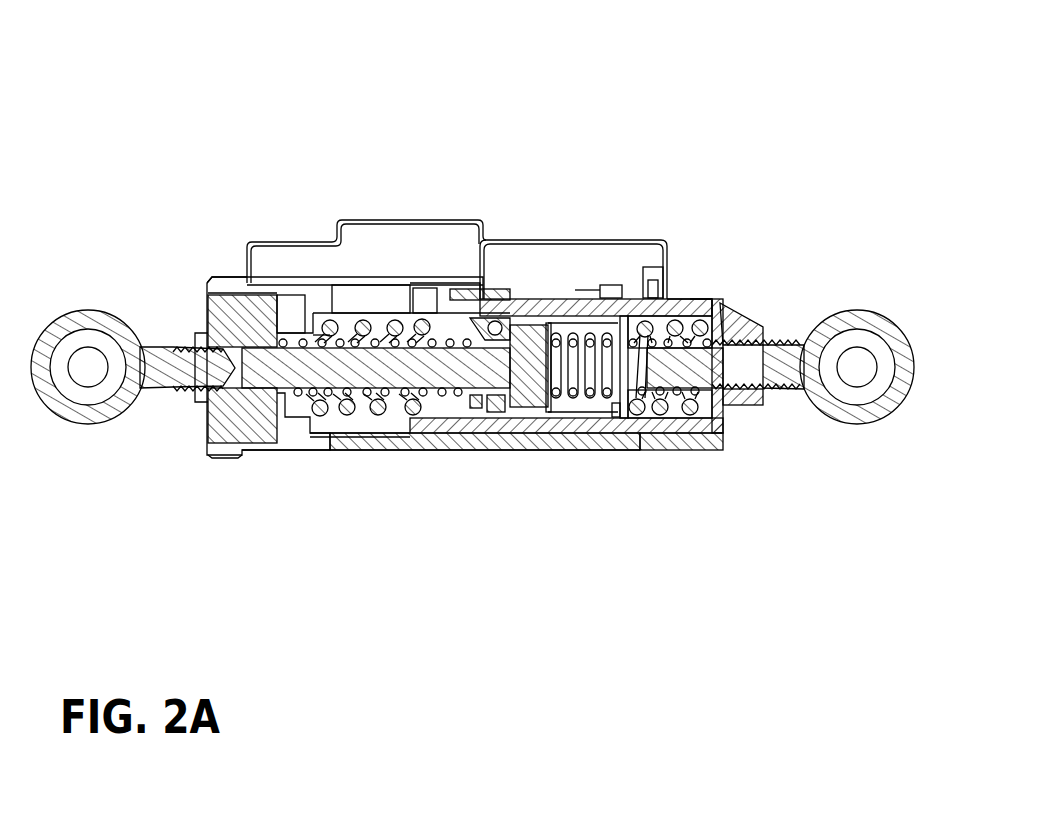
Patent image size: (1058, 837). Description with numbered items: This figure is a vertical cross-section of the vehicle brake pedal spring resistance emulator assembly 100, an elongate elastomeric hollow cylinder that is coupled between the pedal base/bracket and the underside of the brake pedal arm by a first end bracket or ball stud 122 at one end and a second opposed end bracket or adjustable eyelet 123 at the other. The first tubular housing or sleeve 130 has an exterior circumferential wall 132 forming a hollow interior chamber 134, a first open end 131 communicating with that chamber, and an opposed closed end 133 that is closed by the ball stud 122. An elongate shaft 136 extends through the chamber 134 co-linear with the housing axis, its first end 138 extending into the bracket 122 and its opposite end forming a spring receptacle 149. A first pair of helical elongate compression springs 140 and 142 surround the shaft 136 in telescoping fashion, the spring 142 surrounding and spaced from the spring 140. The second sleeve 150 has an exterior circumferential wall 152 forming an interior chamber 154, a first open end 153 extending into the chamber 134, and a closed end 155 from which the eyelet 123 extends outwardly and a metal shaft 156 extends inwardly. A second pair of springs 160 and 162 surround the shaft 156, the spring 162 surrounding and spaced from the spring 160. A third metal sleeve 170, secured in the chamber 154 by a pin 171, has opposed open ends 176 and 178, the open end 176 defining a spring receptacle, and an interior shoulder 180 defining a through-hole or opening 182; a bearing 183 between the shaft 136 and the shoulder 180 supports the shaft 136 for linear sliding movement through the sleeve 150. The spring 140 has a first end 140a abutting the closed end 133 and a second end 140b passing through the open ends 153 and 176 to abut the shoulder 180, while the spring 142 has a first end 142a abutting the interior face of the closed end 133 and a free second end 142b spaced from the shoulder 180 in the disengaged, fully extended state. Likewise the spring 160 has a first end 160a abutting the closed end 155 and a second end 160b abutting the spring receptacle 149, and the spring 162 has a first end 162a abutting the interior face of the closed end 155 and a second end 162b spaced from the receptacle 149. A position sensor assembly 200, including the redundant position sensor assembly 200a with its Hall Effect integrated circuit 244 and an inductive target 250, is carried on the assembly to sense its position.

The vehicle brake pedal spring resistance emulator assembly 100 is at (525, 105).
The first end bracket or ball stud 122 is at (118, 416).
The second opposed end bracket or adjustable eyelet 123 is at (848, 320).
The first tubular housing or sleeve 130 is at (335, 458).
The first open end 131 is at (664, 292).
The exterior circumferential wall 132 is at (437, 440).
The closed end 133 is at (258, 280).
The hollow interior chamber 134 is at (338, 300).
The elongate shaft 136 is at (365, 440).
The first end 138 is at (225, 456).
The helical elongate compression spring 140 is at (470, 293).
The first end 140a is at (310, 418).
The second end 140b is at (437, 440).
The helical elongate compression spring 142 is at (375, 290).
The first end 142a is at (287, 300).
The free second end 142b is at (355, 440).
The spring receptacle 149 is at (527, 414).
The second tubular housing or sleeve 150 is at (686, 442).
The exterior circumferential wall 152 is at (660, 425).
The first open end 153 is at (413, 290).
The interior chamber 154 is at (714, 300).
The closed end 155 is at (737, 405).
The metal shaft 156 is at (747, 313).
The helical elongate compression spring 160 is at (606, 326).
The first end 160a is at (720, 422).
The second end 160b is at (555, 408).
The helical elongate compression spring 162 is at (716, 306).
The first end 162a is at (777, 279).
The second end 162b is at (660, 420).
The third tubular housing or sleeve 170 is at (518, 402).
The pin 171 is at (500, 420).
The open end 176 is at (385, 392).
The open end 178 is at (638, 418).
The interior shoulder 180 is at (485, 300).
The through-hole or opening 182 is at (588, 298).
The bearing 183 is at (480, 416).
The position sensor assembly 200 is at (572, 228).
The position sensor assembly 200a is at (655, 268).
The Hall Effect integrated circuit 244 is at (462, 293).
The inductive target 250 is at (437, 290).